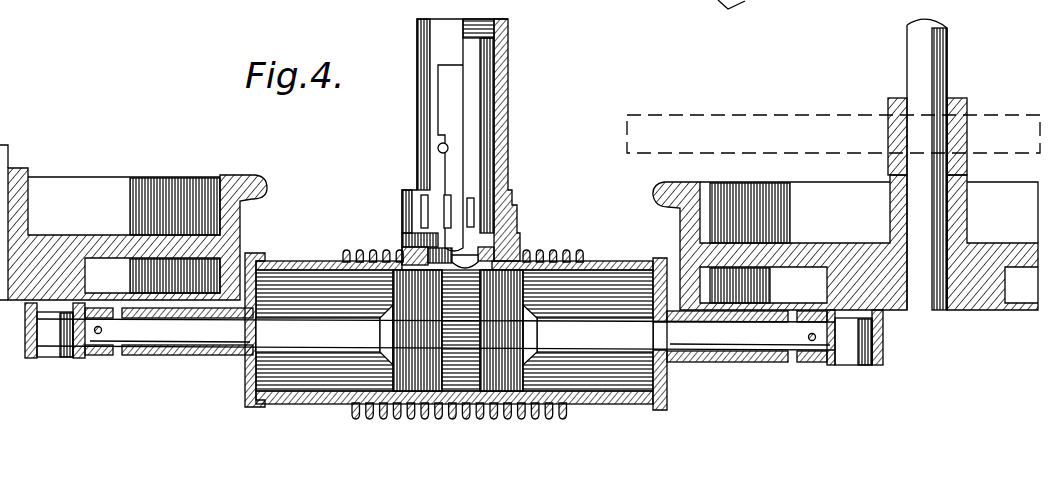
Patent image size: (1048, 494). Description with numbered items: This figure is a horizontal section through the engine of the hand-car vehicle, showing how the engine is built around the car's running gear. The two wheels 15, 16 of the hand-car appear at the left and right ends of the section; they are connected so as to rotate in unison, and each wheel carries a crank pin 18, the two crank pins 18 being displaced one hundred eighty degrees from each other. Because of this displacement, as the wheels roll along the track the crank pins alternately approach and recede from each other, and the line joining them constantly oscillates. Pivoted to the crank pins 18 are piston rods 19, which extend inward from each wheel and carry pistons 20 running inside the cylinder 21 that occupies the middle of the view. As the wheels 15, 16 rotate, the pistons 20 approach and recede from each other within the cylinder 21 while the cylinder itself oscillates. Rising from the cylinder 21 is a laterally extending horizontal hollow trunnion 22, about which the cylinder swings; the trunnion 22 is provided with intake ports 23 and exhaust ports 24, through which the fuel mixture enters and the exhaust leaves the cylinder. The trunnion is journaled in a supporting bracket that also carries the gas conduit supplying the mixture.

The wheel 15 is at (228, 183).
The wheel 16 is at (657, 189).
The crank pin 18 is at (50, 352).
The piston rod 19 is at (436, 333).
The piston 20 is at (493, 358).
The cylinder 21 is at (343, 256).
The hollow trunnion 22 is at (513, 200).
The intake port 23 is at (476, 200).
The exhaust port 24 is at (446, 203).